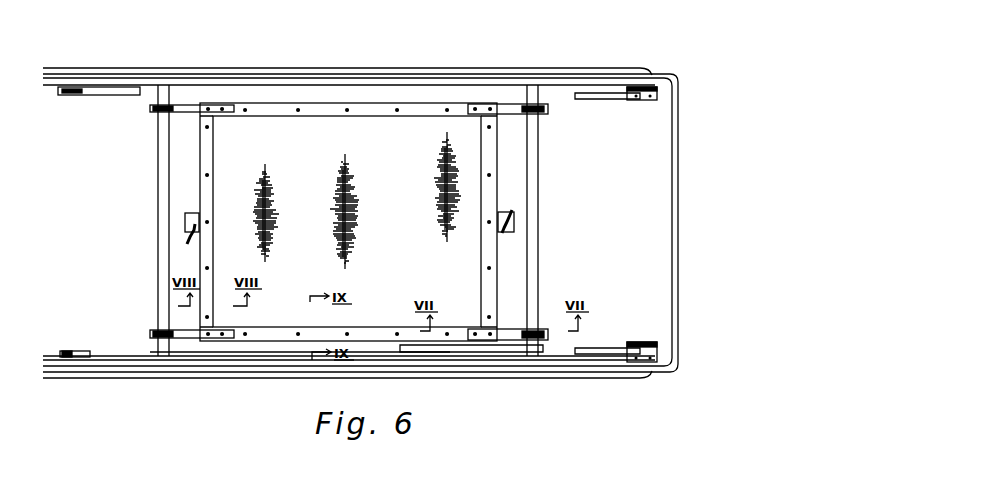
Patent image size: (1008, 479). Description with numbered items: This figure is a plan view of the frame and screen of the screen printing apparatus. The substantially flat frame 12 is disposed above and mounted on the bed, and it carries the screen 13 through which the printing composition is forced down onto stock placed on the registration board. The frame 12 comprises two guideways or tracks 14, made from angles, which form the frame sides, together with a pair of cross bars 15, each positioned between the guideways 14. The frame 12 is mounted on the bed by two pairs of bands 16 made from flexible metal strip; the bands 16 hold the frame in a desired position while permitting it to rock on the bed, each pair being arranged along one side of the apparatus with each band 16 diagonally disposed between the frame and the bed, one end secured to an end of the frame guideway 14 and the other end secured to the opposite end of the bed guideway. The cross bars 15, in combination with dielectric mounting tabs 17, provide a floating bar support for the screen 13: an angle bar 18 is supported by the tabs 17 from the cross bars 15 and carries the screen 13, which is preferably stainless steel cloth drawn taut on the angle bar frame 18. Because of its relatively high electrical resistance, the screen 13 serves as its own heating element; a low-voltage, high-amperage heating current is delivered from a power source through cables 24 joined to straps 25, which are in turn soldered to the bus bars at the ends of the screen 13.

The frame 12 is at (494, 68).
The screen 13 is at (284, 132).
The guideways or tracks 14 is at (620, 72).
The cross bars 15 is at (157, 152).
The bands 16 is at (95, 98).
The mounting tabs 17 is at (150, 109).
The angle bar 18 is at (214, 146).
The cables 24 is at (186, 242).
The straps 25 is at (190, 213).